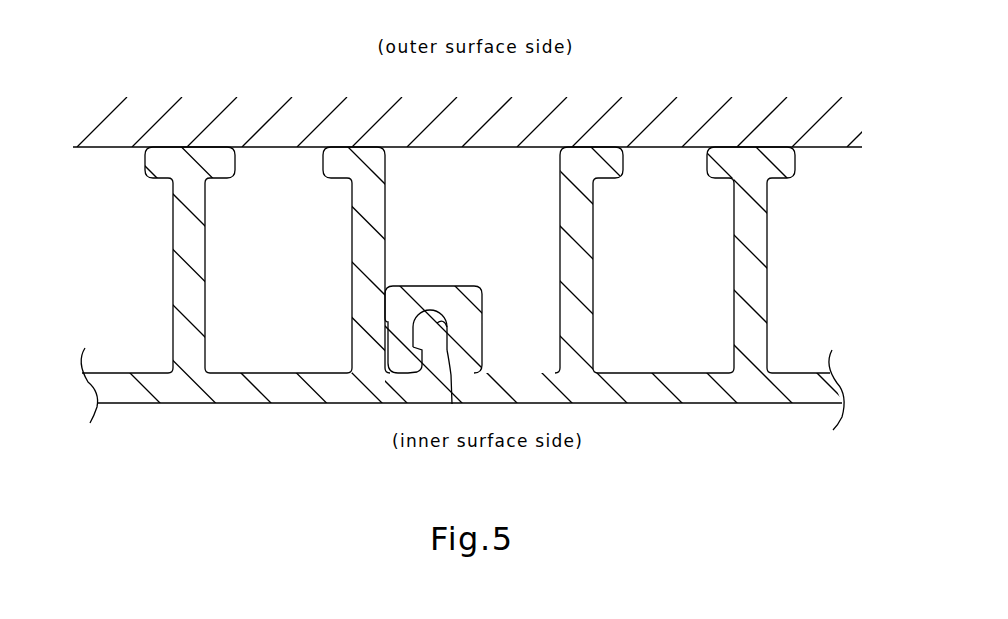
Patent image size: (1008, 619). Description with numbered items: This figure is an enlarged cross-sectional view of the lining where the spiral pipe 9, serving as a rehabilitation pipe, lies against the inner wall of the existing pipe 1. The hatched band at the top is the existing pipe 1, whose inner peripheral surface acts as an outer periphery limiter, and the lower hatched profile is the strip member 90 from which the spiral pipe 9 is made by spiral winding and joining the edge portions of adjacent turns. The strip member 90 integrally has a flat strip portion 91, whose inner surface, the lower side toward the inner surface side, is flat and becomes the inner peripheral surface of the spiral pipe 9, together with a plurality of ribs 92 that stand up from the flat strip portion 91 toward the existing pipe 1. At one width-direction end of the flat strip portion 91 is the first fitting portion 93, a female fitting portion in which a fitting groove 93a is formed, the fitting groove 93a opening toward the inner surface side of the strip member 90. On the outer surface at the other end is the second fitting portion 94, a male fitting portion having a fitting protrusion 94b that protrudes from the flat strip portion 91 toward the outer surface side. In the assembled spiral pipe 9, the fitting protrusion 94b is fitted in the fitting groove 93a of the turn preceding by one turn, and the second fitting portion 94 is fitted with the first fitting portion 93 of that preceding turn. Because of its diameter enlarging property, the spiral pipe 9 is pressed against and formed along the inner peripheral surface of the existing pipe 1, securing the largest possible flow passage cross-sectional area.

The existing pipe 1 is at (110, 147).
The spiral pipe 9 is at (767, 403).
The strip member 90 is at (110, 373).
The flat strip portion 91 is at (185, 403).
The rib 92 is at (352, 227).
The first fitting portion 93 is at (383, 307).
The fitting groove 93a is at (445, 322).
The second fitting portion 94 is at (448, 335).
The fitting protrusion 94b is at (424, 318).